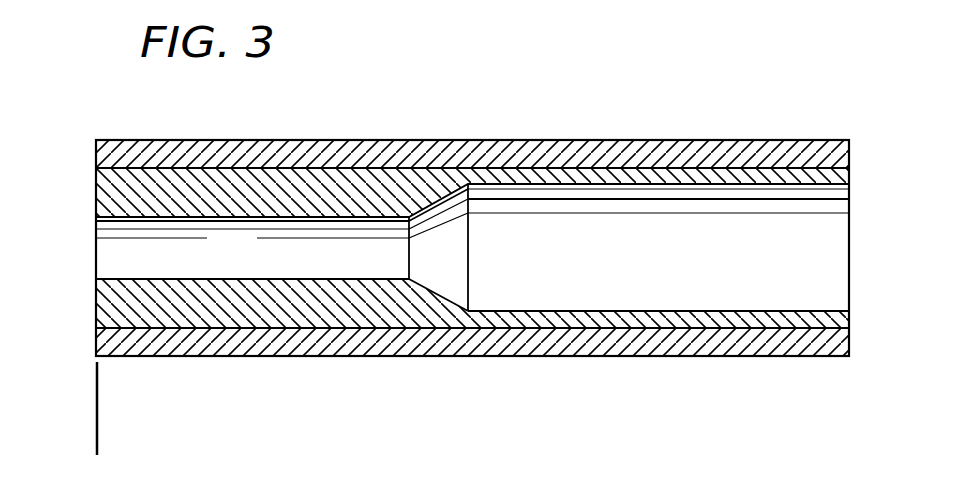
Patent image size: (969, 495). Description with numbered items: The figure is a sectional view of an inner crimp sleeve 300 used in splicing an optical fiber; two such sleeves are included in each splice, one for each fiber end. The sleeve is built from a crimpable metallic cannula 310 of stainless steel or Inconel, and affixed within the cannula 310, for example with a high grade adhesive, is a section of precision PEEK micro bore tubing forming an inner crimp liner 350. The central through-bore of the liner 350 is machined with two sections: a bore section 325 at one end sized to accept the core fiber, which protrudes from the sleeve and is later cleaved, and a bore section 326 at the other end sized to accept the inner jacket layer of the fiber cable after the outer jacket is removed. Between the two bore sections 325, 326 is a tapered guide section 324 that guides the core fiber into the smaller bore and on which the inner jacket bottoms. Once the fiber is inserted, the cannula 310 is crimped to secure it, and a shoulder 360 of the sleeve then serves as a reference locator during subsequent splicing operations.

The inner crimp sleeve 300 is at (468, 108).
The crimpable metallic cannula 310 is at (95, 150).
The inner crimp liner 350 is at (95, 192).
The bore section 325 is at (236, 278).
The tapered guide section 324 is at (446, 293).
The bore section 326 is at (670, 310).
The shoulder 360 is at (99, 408).